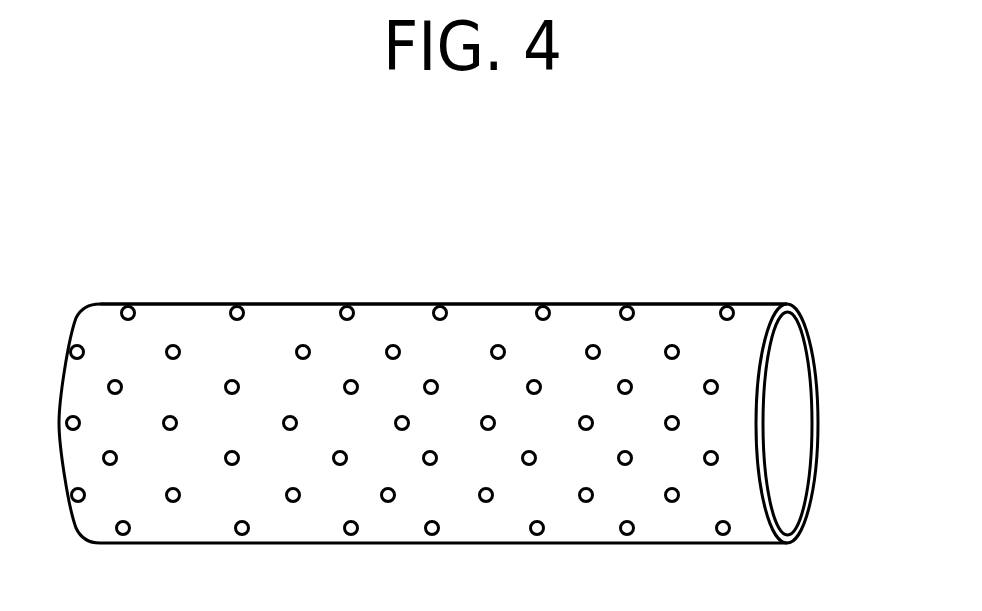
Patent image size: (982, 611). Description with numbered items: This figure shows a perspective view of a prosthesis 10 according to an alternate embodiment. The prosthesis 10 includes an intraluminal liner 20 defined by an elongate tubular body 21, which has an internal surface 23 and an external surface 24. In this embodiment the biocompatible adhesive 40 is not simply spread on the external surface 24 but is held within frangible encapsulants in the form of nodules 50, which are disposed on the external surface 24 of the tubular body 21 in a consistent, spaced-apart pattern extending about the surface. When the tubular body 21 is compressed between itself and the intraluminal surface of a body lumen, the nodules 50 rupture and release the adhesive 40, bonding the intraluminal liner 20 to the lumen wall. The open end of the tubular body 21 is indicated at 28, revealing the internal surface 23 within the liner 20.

The prosthesis 10 is at (172, 210).
The intraluminal liner 20 is at (678, 303).
The elongate tubular body 21 is at (472, 320).
The internal surface 23 is at (795, 370).
The external surface 24 is at (697, 320).
The open end / lumen 28 is at (802, 427).
The biocompatible adhesive 40 is at (352, 308).
The nodules 50 is at (345, 305).